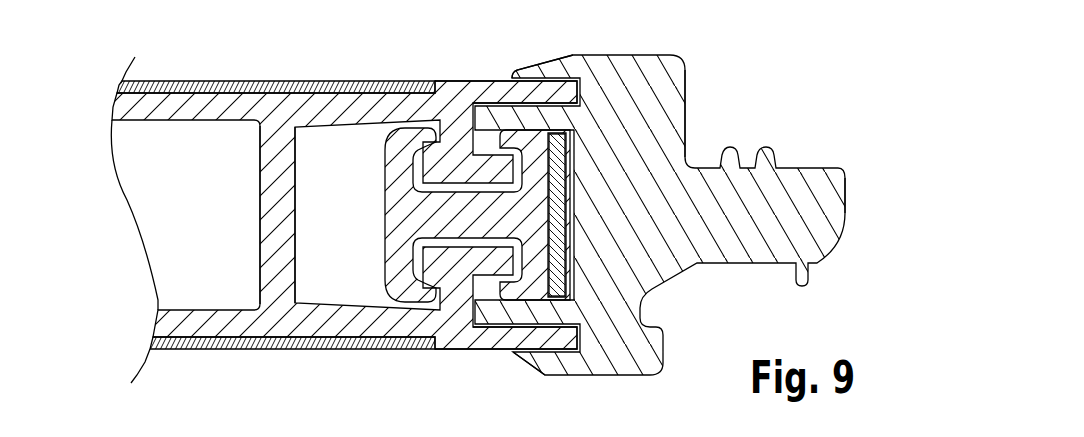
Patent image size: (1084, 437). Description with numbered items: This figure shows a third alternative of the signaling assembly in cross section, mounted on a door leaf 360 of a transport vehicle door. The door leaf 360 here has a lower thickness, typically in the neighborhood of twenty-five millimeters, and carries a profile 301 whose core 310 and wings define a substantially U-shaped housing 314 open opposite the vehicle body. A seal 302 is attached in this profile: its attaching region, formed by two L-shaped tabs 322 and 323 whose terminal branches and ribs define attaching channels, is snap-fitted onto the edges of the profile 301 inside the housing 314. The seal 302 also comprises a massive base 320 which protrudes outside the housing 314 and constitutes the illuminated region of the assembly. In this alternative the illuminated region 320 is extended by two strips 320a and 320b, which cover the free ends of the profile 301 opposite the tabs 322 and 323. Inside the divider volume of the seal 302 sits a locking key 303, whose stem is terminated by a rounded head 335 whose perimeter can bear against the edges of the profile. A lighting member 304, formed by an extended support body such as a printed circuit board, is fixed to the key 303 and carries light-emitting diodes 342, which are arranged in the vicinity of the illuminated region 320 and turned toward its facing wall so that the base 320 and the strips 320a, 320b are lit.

The profile 301 is at (185, 153).
The seal 302 is at (800, 125).
The locking key 303 is at (360, 160).
The lighting member 304 is at (572, 197).
The core 310 is at (280, 198).
The housing 314 is at (316, 243).
The base 320 is at (692, 151).
The strip 320a is at (546, 67).
The strip 320b is at (547, 360).
The tab 322 is at (532, 118).
The tab 323 is at (533, 315).
The head 335 is at (392, 230).
The light-emitting diodes 342 is at (576, 172).
The door leaf 360 is at (244, 48).